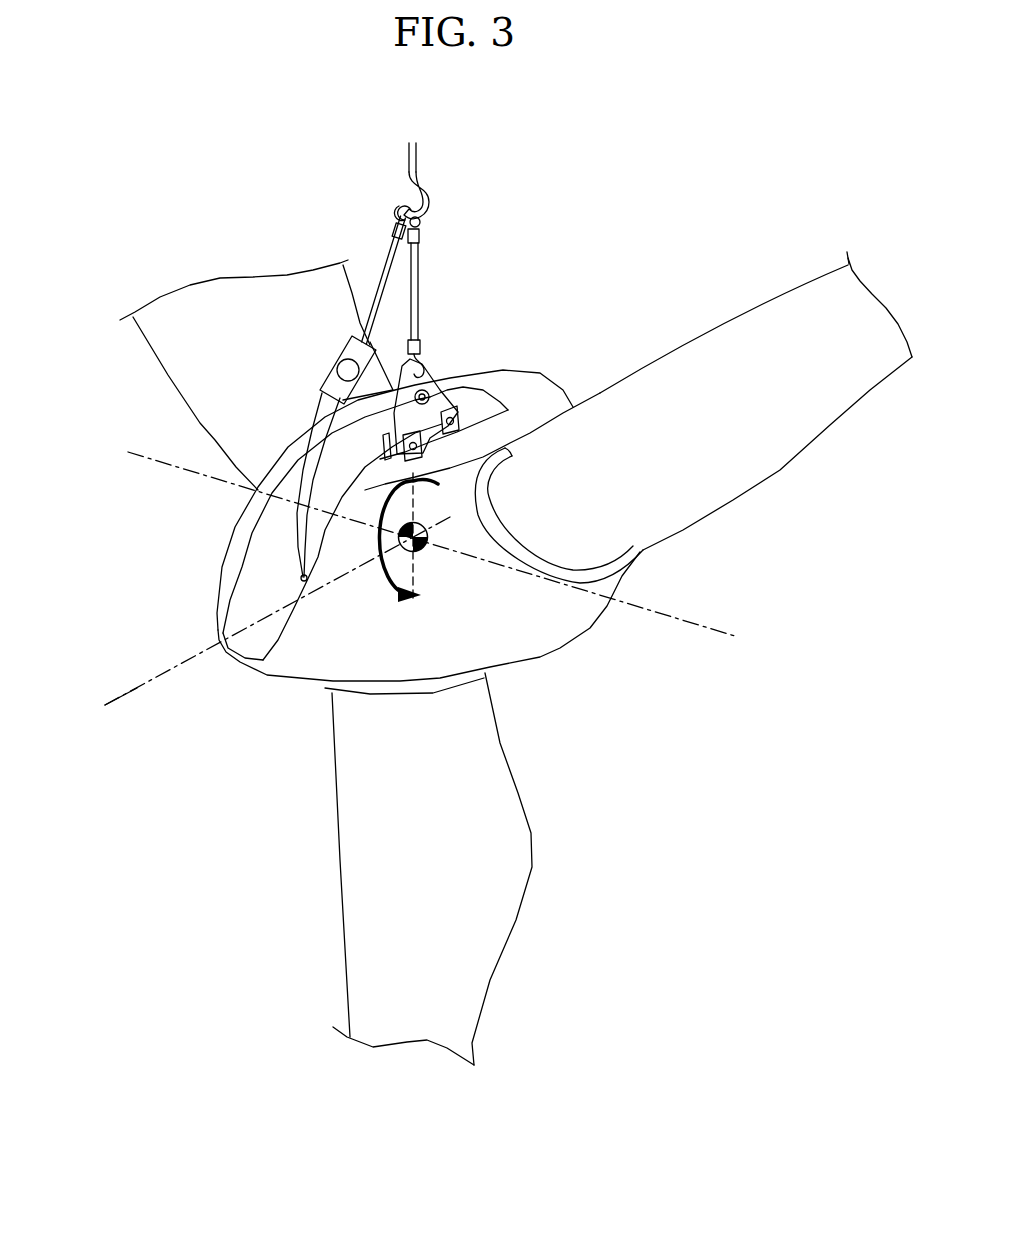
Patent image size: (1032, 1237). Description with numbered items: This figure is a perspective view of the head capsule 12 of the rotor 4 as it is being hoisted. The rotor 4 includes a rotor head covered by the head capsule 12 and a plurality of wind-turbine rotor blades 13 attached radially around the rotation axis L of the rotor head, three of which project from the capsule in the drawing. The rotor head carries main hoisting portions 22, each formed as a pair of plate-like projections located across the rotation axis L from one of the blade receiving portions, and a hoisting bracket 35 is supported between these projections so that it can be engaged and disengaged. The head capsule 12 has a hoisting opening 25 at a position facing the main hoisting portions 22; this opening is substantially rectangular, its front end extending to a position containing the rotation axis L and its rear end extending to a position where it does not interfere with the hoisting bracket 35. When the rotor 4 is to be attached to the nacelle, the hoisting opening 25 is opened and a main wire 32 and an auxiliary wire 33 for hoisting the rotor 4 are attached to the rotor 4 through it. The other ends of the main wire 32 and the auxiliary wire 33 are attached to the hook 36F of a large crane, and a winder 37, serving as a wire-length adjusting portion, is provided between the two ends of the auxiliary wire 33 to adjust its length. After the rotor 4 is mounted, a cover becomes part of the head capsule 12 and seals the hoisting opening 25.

The rotor 4 is at (584, 262).
The head capsule 12 is at (557, 632).
The wind-turbine rotor blades 13 is at (173, 355).
The main hoisting portions 22 is at (516, 407).
The hoisting opening 25 is at (262, 563).
The main wire 32 is at (419, 277).
The auxiliary wire 33 is at (385, 265).
The hoisting bracket 35 is at (439, 410).
The hook 36F is at (418, 155).
The winder 37 is at (333, 363).
The rotation axis L is at (137, 690).